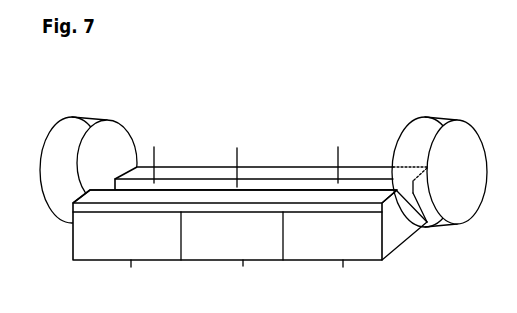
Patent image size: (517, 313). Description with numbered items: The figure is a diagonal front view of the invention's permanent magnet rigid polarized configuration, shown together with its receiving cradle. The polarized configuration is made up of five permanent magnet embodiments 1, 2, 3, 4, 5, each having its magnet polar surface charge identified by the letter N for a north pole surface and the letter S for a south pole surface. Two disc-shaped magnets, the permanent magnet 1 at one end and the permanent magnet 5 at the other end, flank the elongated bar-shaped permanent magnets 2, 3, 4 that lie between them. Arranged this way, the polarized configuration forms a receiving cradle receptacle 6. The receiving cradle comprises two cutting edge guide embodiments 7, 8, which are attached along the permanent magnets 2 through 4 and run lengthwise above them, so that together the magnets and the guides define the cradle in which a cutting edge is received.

The permanent magnet embodiment 1 is at (67, 138).
The permanent magnet embodiment 2 is at (100, 242).
The permanent magnet embodiment 3 is at (195, 247).
The permanent magnet embodiment 4 is at (299, 247).
The permanent magnet embodiment 5 is at (426, 123).
The receiving cradle receptacle embodiment 6 is at (407, 190).
The cutting edge guide embodiment 7 is at (192, 172).
The cutting edge guide embodiment 8 is at (272, 197).